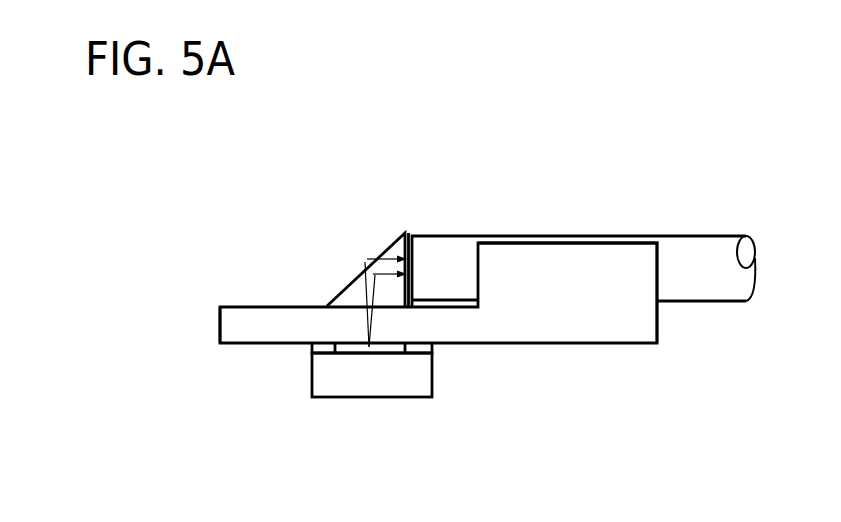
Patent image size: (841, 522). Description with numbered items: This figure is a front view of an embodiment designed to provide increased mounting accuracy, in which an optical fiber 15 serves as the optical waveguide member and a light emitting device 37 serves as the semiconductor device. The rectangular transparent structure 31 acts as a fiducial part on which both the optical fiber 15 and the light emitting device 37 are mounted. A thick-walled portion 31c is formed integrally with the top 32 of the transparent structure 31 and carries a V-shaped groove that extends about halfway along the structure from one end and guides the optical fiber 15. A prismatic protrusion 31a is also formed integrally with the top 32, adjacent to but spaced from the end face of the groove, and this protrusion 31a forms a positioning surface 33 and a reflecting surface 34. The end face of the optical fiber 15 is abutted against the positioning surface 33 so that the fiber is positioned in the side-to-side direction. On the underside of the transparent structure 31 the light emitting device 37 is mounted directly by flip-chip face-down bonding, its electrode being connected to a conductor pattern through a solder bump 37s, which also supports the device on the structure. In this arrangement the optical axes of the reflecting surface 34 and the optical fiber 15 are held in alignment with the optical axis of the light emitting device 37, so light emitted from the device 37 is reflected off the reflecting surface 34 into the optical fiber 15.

The optical fiber 15 is at (690, 248).
The transparent structure 31 is at (248, 338).
The prismatic protrusion 31a is at (400, 243).
The thick-walled portion 31c is at (650, 272).
The top 32 is at (250, 305).
The positioning surface 33 is at (420, 247).
The reflecting surface 34 is at (359, 258).
The light emitting device 37 is at (408, 390).
The solder bump 37s is at (422, 345).